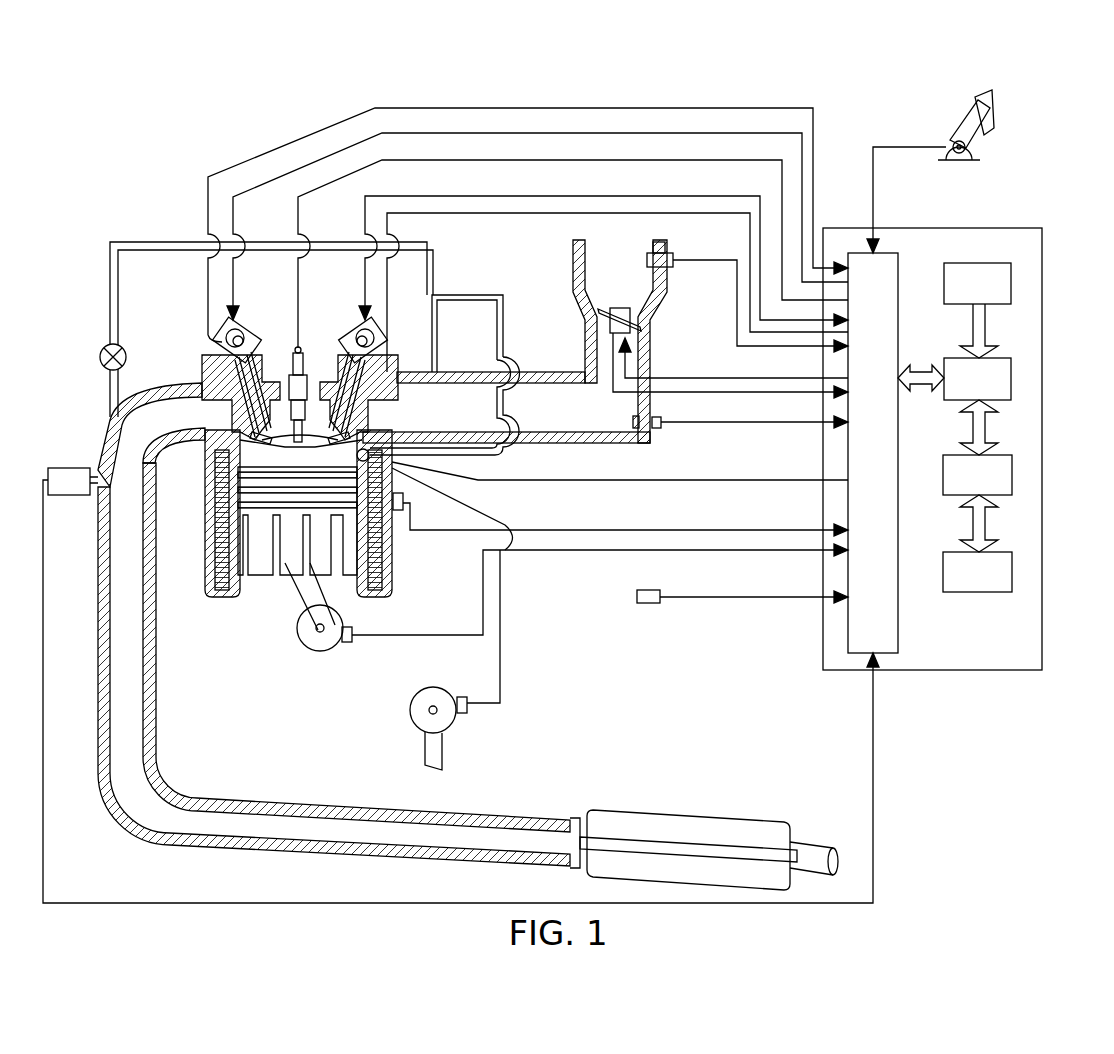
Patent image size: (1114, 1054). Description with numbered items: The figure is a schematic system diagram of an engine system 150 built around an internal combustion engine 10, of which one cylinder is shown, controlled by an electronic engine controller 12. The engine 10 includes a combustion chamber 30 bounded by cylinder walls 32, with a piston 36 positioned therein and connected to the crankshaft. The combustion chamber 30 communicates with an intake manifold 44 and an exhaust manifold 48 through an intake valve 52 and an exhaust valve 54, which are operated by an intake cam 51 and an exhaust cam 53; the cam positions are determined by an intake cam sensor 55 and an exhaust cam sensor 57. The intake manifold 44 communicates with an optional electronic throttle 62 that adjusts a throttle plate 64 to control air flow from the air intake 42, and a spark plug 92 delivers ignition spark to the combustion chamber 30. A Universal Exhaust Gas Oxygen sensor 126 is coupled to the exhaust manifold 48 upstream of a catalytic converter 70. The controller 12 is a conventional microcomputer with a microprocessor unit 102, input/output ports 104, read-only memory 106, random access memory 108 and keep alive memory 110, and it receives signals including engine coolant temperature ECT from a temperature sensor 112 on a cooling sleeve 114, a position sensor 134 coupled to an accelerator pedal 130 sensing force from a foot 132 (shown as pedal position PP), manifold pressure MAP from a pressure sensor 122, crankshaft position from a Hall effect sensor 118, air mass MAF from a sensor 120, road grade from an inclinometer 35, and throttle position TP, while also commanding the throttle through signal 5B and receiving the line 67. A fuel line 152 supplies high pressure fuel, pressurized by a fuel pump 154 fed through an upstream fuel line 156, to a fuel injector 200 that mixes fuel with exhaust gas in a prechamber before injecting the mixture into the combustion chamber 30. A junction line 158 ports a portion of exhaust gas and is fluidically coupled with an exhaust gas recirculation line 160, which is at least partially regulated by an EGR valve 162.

The internal combustion engine 10 is at (120, 298).
The electronic engine controller 12 is at (1037, 228).
The combustion chamber 30 is at (295, 455).
The cylinder walls 32 is at (247, 592).
The inclinometer 35 is at (645, 604).
The piston 36 is at (283, 556).
The air intake 42 is at (630, 284).
The intake manifold 44 is at (568, 419).
The exhaust manifold 48 is at (188, 422).
The intake cam 51 is at (360, 318).
The intake valve 52 is at (348, 425).
The exhaust cam 53 is at (240, 318).
The exhaust valve 54 is at (250, 422).
The intake cam sensor 55 is at (380, 342).
The exhaust cam sensor 57 is at (220, 340).
The electronic throttle 62 is at (640, 327).
The throttle plate 64 is at (597, 315).
The signal line 67 is at (553, 480).
The catalytic converter 70 is at (598, 810).
The spark plug 92 is at (302, 346).
The microprocessor unit 102 is at (1011, 378).
The input/output ports 104 is at (898, 262).
The read-only memory 106 is at (1011, 283).
The random access memory 108 is at (1012, 478).
The keep alive memory 110 is at (1012, 572).
The temperature sensor 112 is at (408, 512).
The cooling sleeve 114 is at (392, 560).
The Hall effect sensor 118 is at (350, 645).
The air mass sensor 120 is at (675, 257).
The pressure sensor 122 is at (665, 428).
The Universal Exhaust Gas Oxygen sensor 126 is at (68, 468).
The accelerator pedal 130 is at (950, 125).
The foot 132 is at (992, 108).
The position sensor 134 is at (972, 150).
The engine system 150 is at (665, 92).
The fuel line 152 is at (503, 620).
The fuel pump 154 is at (455, 718).
The upstream fuel line 156 is at (425, 758).
The junction line 158 is at (478, 297).
The exhaust gas recirculation line 160 is at (150, 240).
The EGR valve 162 is at (100, 352).
The fuel injector 200 is at (300, 570).
The pedal position signal PP is at (876, 205).
The mass air flow signal MAF is at (737, 280).
The throttle position signal TP is at (712, 393).
The engine manifold pressure MAP is at (727, 423).
The engine coolant temperature ECT is at (592, 530).
The throttle actuator signal 5B is at (615, 340).